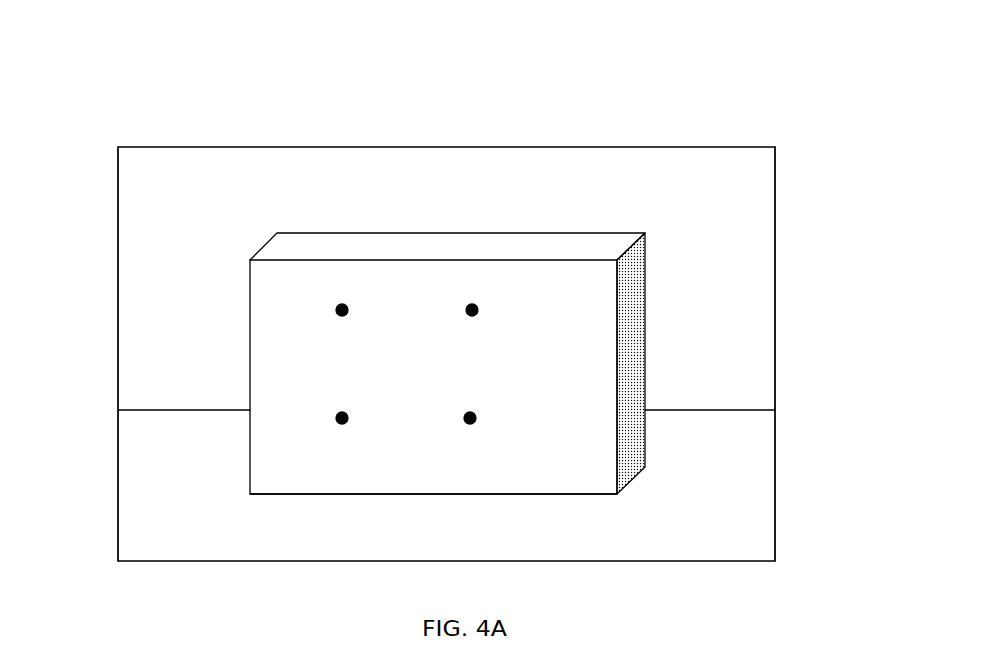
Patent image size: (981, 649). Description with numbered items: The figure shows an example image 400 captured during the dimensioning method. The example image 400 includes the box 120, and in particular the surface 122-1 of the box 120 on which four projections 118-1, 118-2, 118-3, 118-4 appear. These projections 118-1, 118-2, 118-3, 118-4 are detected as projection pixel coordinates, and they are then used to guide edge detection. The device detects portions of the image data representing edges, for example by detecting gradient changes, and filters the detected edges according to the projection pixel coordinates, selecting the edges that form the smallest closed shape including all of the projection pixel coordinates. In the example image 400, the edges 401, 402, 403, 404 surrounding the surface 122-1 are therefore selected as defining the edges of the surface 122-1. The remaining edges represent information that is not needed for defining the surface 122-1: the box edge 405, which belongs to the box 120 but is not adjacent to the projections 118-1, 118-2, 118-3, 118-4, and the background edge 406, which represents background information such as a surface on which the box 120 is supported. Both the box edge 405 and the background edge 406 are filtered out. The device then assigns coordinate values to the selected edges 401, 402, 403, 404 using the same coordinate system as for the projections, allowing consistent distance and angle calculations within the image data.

The example image 400 is at (224, 132).
The edge 401 is at (248, 378).
The edge 402 is at (407, 260).
The edge 403 is at (645, 378).
The edge 404 is at (320, 494).
The box edge 405 is at (645, 280).
The background edge 406 is at (690, 410).
The box 120 is at (520, 233).
The surface 122-1 is at (277, 337).
The projection 118-1 is at (342, 310).
The projection 118-2 is at (472, 310).
The projection 118-3 is at (342, 418).
The projection 118-4 is at (470, 418).